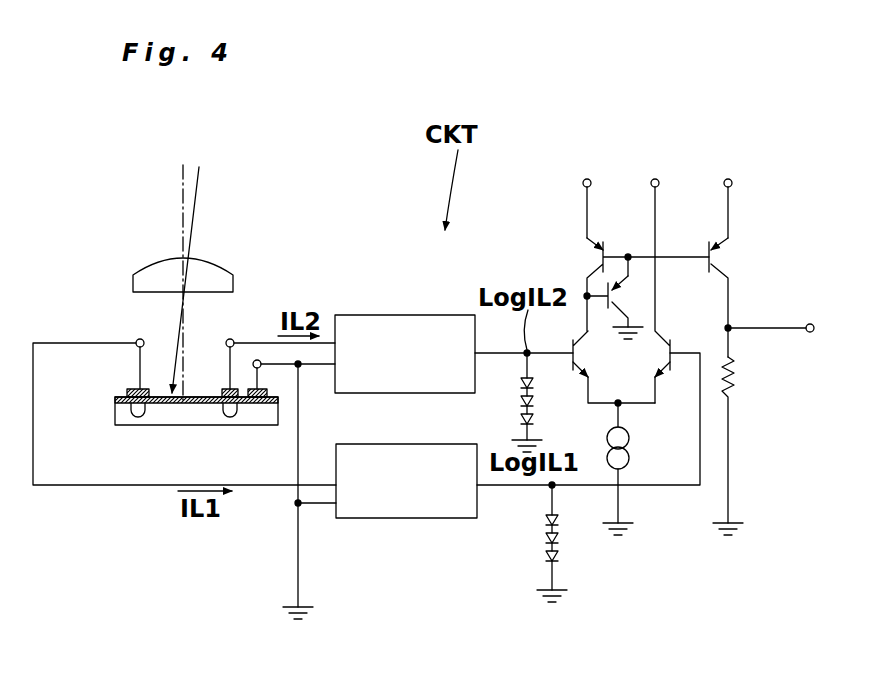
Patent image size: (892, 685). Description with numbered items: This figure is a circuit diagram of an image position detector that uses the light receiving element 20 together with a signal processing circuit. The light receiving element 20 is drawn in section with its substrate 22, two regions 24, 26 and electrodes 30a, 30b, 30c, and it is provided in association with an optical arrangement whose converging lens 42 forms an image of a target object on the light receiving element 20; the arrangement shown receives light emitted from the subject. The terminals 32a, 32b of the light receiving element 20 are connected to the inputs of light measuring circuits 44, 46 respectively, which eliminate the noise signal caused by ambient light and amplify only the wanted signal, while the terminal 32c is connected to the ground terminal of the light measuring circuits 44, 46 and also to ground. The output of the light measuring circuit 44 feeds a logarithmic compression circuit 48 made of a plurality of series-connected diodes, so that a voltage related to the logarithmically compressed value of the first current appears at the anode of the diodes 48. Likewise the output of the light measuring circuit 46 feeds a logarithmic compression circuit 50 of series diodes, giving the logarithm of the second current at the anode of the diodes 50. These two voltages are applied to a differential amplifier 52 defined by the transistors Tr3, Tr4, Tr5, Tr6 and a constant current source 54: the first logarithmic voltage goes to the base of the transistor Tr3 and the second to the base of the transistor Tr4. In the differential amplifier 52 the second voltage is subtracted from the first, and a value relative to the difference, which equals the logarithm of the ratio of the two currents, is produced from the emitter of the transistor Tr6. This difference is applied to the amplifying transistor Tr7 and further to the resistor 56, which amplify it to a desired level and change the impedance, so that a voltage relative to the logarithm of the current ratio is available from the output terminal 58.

The light receiving element 20 is at (206, 417).
The semiconductor substrate 22 is at (192, 410).
The first photodiode region 24 is at (136, 416).
The second photodiode region 26 is at (232, 416).
The electrode 30a is at (128, 390).
The electrode 30b is at (225, 389).
The electrode 30c is at (266, 390).
The terminal 32a is at (139, 339).
The terminal 32b is at (230, 339).
The terminal 32c is at (257, 360).
The converging lens 42 is at (206, 272).
The light measuring circuit 44 is at (426, 512).
The light measuring circuit 46 is at (412, 316).
The logarithmic compression circuit 48 is at (561, 512).
The logarithmic compression circuit 50 is at (536, 375).
The differential amplifier 52 is at (601, 293).
The constant current source 54 is at (632, 445).
The resistor 56 is at (735, 378).
The output terminal 58 is at (808, 323).
The transistor Tr3 is at (662, 365).
The transistor Tr4 is at (577, 349).
The transistor Tr5 is at (598, 263).
The transistor Tr6 is at (612, 296).
The amplifying transistor Tr7 is at (713, 258).